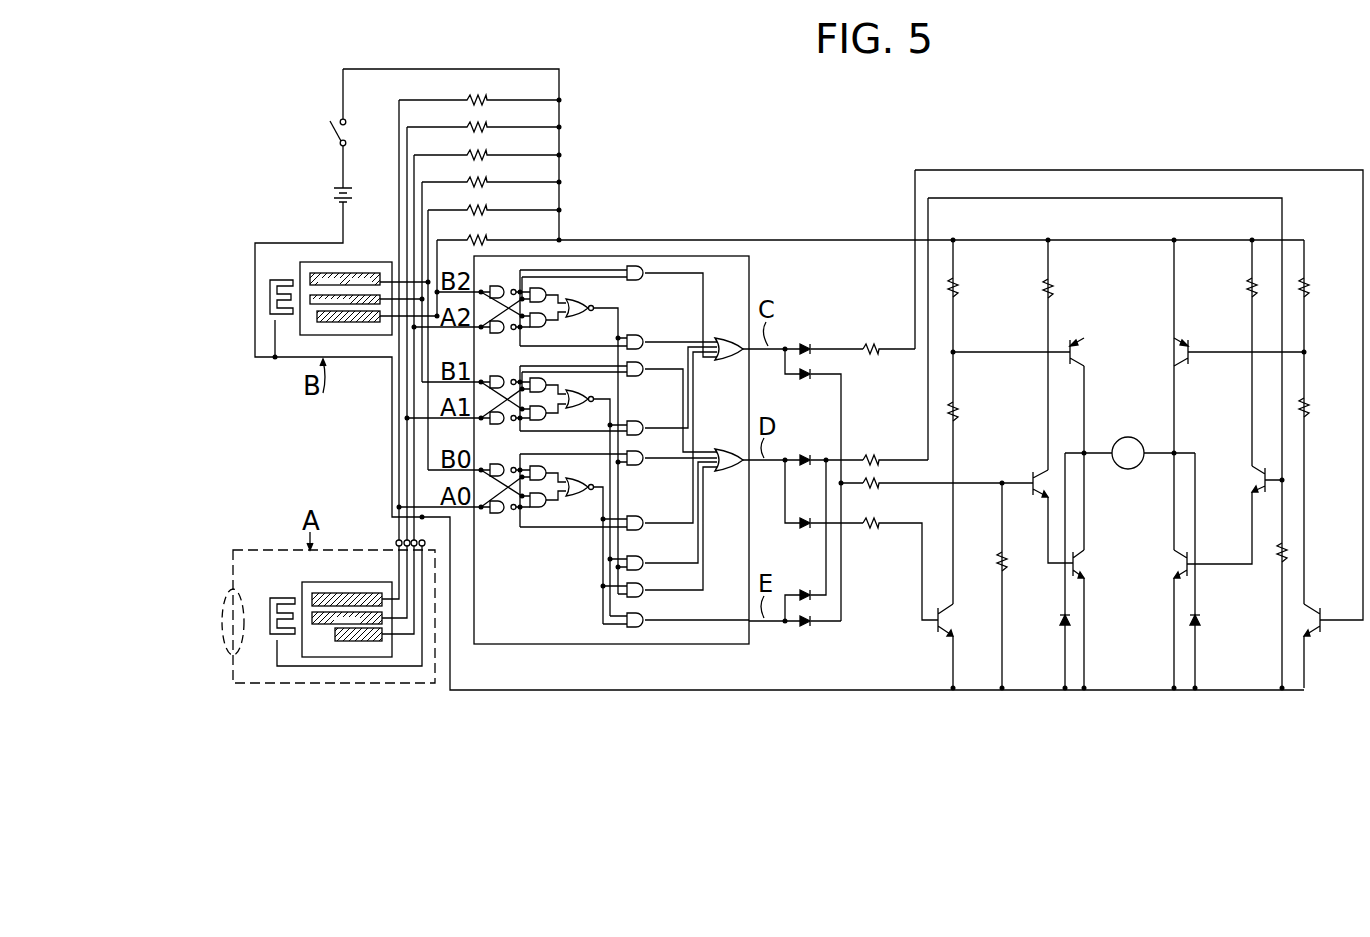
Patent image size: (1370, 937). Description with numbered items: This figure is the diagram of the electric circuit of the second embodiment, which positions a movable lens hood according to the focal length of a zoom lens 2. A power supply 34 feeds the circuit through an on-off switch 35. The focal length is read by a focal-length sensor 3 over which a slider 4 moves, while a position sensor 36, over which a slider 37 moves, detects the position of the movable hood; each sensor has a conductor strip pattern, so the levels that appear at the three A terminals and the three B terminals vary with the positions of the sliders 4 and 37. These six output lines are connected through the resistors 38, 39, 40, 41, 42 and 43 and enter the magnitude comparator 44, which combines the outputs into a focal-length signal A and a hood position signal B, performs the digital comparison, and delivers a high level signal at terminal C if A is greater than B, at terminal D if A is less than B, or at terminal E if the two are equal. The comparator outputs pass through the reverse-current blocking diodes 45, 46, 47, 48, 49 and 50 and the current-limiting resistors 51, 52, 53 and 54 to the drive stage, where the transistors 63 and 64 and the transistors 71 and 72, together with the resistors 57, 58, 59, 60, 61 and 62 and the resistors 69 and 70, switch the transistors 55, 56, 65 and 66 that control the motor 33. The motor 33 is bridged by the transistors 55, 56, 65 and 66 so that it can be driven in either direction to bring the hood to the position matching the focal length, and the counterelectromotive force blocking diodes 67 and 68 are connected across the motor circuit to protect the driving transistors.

The zoom lens 2 is at (230, 597).
The focal-length sensor 3 is at (347, 584).
The slider 4 is at (274, 598).
The motor 33 is at (1128, 469).
The power supply 34 is at (333, 197).
The on-off switch 35 is at (330, 120).
The position sensor 36 is at (355, 322).
The slider 37 is at (270, 297).
The resistor 38 is at (490, 99).
The resistor 39 is at (490, 126).
The resistor 40 is at (490, 154).
The resistor 41 is at (490, 181).
The resistor 42 is at (490, 209).
The resistor 43 is at (490, 238).
The magnitude comparator 44 is at (609, 256).
The reverse-current blocking diode 45 is at (803, 342).
The reverse-current blocking diode 46 is at (806, 380).
The reverse-current blocking diode 47 is at (805, 466).
The reverse-current blocking diode 48 is at (800, 525).
The reverse-current blocking diode 49 is at (808, 592).
The reverse-current blocking diode 50 is at (808, 624).
The current-limiting resistor 51 is at (872, 344).
The current-limiting resistor 52 is at (875, 458).
The current-limiting resistor 53 is at (878, 486).
The current-limiting resistor 54 is at (875, 528).
The transistor 55 is at (1078, 347).
The transistor 56 is at (1186, 352).
The resistor 57 is at (1050, 288).
The resistor 58 is at (1248, 292).
The resistor 59 is at (958, 289).
The resistor 60 is at (1307, 288).
The resistor 61 is at (959, 412).
The resistor 62 is at (1310, 411).
The transistor 63 is at (1036, 472).
The transistor 64 is at (1254, 478).
The transistor 65 is at (1090, 568).
The transistor 66 is at (1177, 560).
The counterelectromotive force blocking diode 67 is at (1058, 620).
The counterelectromotive force blocking diode 68 is at (1202, 620).
The resistor 69 is at (1006, 564).
The resistor 70 is at (1278, 562).
The transistor 71 is at (946, 633).
The transistor 72 is at (1319, 608).